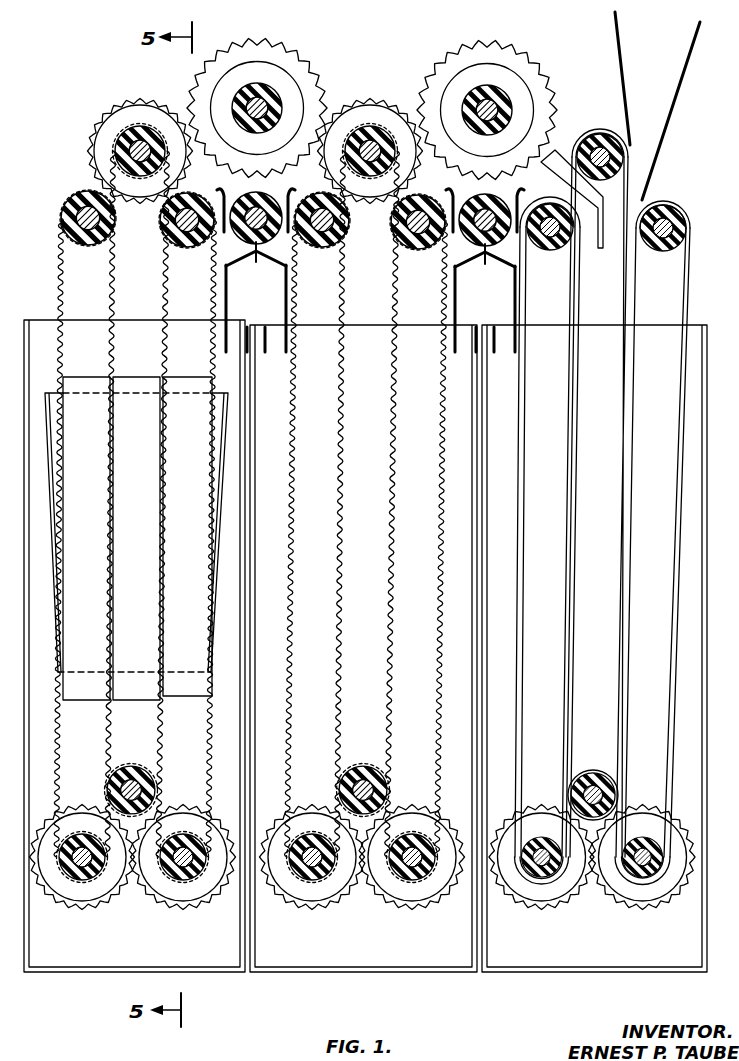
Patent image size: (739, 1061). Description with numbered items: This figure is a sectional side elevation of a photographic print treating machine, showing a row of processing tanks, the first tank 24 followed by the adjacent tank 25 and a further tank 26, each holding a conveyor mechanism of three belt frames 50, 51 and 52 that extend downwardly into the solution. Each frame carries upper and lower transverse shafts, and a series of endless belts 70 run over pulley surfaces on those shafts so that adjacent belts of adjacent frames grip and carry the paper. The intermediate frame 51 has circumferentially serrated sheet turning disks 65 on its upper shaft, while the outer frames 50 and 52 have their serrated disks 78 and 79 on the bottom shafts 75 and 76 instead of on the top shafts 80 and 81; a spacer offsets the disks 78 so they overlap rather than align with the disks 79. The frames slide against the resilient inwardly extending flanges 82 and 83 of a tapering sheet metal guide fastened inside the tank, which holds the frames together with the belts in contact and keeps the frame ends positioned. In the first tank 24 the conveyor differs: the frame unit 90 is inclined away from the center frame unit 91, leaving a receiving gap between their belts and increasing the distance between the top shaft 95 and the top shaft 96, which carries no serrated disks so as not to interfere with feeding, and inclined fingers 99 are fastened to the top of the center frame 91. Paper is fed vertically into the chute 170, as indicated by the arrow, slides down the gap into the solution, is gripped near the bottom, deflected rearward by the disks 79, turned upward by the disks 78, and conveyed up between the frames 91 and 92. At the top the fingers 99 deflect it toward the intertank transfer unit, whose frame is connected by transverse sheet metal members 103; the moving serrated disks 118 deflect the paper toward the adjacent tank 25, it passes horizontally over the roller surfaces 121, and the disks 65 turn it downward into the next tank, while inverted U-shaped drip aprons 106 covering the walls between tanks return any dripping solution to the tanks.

The serrated disks 118 is at (300, 64).
The sheet turning disks 65 is at (133, 104).
The top shaft 80 is at (88, 218).
The top shaft 81 is at (173, 248).
The endless belts 70 is at (147, 281).
The transverse sheet metal members 103 is at (285, 190).
The roller surfaces 121 is at (370, 262).
The drip apron 106 is at (229, 302).
The inclined fingers 99 is at (553, 170).
The top shaft 96 is at (599, 135).
The top shaft 95 is at (680, 215).
The belt frame 92 is at (564, 299).
The center frame unit 91 is at (614, 299).
The frame unit 90 is at (672, 299).
The chute 170 is at (649, 76).
The belt frame 50 is at (83, 381).
The intermediate frame 51 is at (136, 381).
The belt frame 52 is at (187, 381).
The resilient inwardly extending flange 82 is at (56, 612).
The resilient inwardly extending flange 83 is at (214, 603).
The bottom shaft 75 is at (94, 833).
The bottom shaft 76 is at (194, 833).
The serrated disks 78 is at (73, 908).
The serrated disks 79 is at (186, 908).
The tank 26 is at (89, 973).
The tank 25 is at (368, 973).
The first tank 24 is at (572, 973).